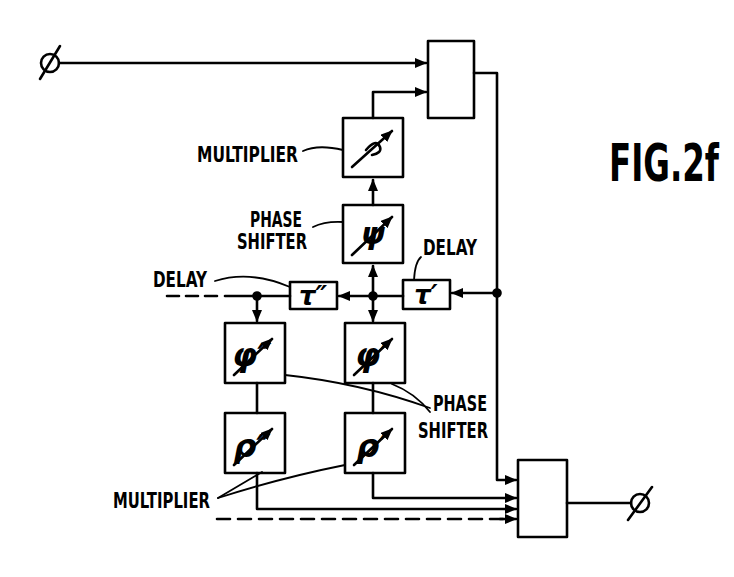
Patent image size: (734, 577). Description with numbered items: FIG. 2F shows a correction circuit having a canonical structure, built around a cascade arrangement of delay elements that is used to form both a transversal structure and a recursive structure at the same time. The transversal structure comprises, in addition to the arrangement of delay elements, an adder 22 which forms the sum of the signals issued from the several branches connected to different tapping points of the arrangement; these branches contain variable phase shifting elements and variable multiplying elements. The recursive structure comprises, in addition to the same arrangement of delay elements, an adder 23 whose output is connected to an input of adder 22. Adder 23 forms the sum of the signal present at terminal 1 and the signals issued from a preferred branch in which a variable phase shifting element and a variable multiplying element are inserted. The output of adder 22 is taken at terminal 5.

The terminal 1 is at (50, 73).
The adder 23 is at (474, 50).
The adder 22 is at (567, 463).
The output terminal 5 is at (645, 494).